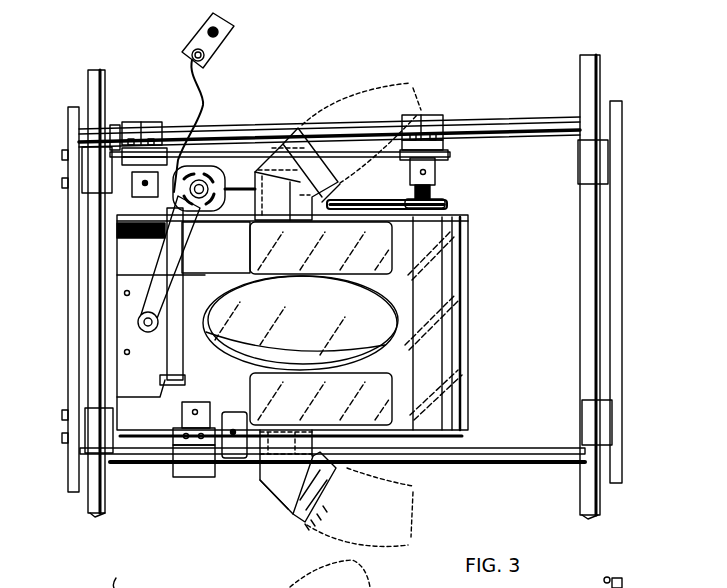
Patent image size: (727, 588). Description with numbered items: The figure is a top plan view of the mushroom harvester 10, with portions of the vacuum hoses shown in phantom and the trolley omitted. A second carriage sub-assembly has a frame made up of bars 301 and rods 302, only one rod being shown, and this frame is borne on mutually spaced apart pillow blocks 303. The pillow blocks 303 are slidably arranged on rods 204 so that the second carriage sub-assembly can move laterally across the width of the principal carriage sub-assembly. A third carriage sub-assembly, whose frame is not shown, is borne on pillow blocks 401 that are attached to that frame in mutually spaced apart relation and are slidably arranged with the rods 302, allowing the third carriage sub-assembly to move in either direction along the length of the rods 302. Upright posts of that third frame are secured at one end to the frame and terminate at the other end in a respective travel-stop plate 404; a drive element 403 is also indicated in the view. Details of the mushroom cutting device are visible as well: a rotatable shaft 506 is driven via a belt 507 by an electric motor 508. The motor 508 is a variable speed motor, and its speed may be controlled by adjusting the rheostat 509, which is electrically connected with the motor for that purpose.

The article / test object 10 is at (408, 363).
The rods 204 is at (93, 70).
The bars 301 is at (68, 135).
The rods 302 is at (478, 115).
The pillow blocks 303 is at (97, 167).
The pillow blocks 401 is at (146, 120).
The carriage drive 403 is at (134, 570).
The travel-stop plate 404 is at (147, 182).
The rotatable shaft 506 is at (138, 324).
The belt 507 is at (157, 287).
The electric motor 508 is at (218, 140).
The rheostat 509 is at (193, 33).